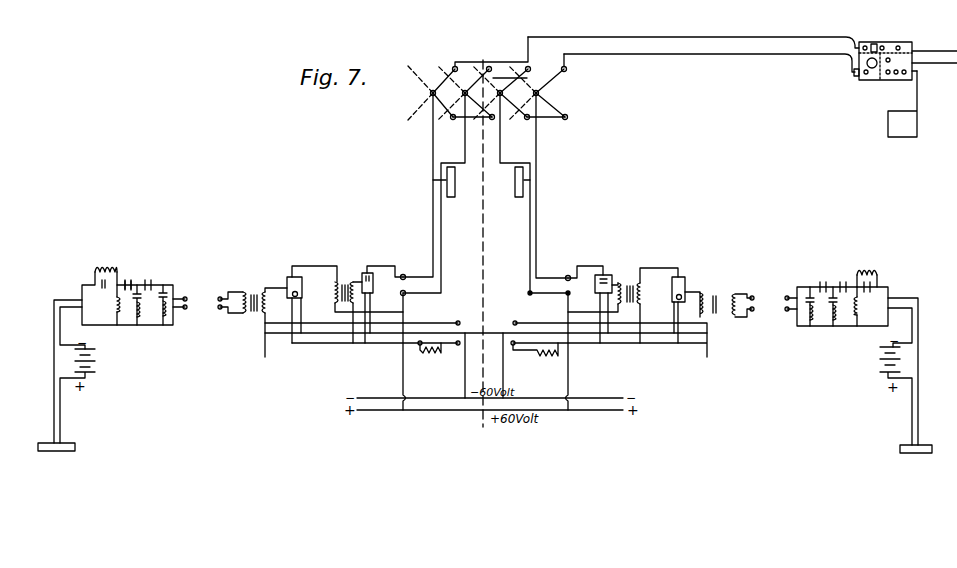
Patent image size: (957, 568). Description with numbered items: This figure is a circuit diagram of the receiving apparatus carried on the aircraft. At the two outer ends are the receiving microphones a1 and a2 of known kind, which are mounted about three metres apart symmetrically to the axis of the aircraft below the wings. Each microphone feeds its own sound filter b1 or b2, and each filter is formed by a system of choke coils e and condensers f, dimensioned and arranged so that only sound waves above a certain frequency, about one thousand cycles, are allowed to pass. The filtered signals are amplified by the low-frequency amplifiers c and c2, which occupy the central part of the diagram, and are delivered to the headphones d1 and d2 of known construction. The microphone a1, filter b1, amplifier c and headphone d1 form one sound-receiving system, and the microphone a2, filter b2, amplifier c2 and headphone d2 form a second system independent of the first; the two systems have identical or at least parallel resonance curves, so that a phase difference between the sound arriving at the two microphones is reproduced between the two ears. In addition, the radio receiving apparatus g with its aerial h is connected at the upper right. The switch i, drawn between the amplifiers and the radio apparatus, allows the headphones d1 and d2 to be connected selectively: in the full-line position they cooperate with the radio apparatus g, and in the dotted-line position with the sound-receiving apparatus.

The receiving microphone a1 is at (68, 448).
The receiving microphone a2 is at (922, 453).
The sound filter b1 is at (132, 325).
The sound filter b2 is at (845, 324).
The low-frequency amplifier c is at (322, 318).
The low-frequency amplifier c2 is at (658, 316).
The headphone d1 is at (450, 190).
The headphone d2 is at (522, 190).
The choke coil e is at (98, 263).
The condenser f is at (149, 284).
The radio receiving apparatus g is at (876, 80).
The aerial h is at (907, 128).
The switch i is at (553, 85).